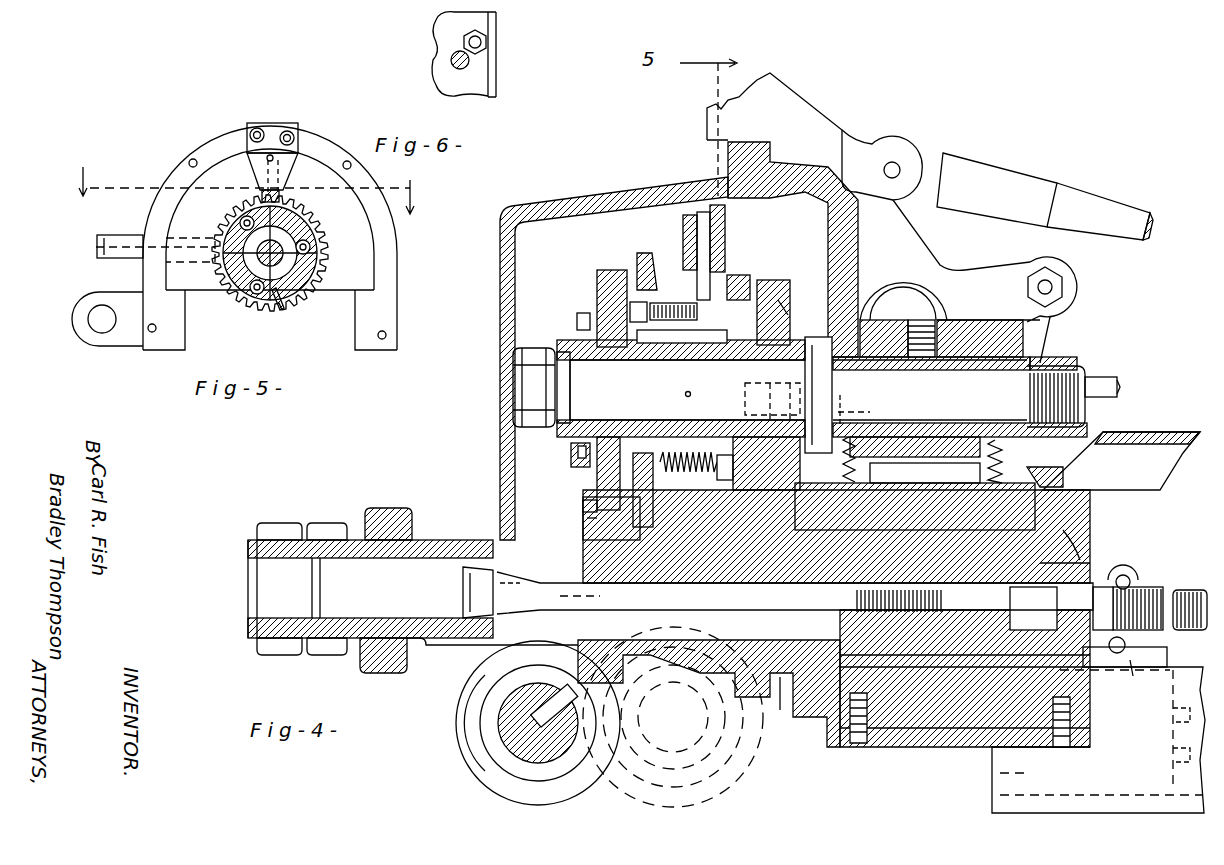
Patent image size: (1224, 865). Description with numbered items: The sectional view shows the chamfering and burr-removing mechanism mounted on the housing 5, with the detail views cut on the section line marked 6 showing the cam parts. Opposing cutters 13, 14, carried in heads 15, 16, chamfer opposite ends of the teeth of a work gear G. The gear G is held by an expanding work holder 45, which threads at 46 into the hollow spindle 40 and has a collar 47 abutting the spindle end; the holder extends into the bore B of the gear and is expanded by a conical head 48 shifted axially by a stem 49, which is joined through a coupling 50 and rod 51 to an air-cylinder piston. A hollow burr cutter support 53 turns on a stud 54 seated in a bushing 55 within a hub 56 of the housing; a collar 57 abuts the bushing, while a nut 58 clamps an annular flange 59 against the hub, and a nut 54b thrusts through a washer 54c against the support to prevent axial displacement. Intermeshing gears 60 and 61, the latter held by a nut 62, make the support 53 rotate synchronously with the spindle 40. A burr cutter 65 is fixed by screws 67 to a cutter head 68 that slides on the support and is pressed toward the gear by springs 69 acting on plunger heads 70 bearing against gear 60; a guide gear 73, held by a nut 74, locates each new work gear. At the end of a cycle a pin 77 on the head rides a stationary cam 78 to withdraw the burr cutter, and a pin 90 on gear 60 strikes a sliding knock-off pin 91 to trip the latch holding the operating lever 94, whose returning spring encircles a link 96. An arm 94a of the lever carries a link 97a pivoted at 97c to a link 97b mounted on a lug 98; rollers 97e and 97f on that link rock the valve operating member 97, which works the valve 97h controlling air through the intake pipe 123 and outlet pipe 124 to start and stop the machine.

In FIG. 4, the housing 5 is at (843, 253).
In FIG. 5, the section line 6- 6 is at (246, 178).
In FIG. 4, the cutter 13 is at (563, 683).
In FIG. 4, the cutter 14 is at (673, 717).
In FIG. 4, the head 15 is at (450, 749).
In FIG. 4, the head 16 is at (737, 781).
In FIG. 4, the spindle 40 is at (1040, 563).
In FIG. 4, the work holder 45 is at (584, 520).
In FIG. 4, the threaded connection 46 is at (756, 583).
In FIG. 4, the collar 47 is at (587, 510).
In FIG. 4, the expander head 48 is at (500, 590).
In FIG. 4, the stem 49 is at (728, 597).
In FIG. 4, the coupling 50 is at (922, 603).
In FIG. 4, the rod 51 is at (1183, 590).
In FIG. 4, the burr cutter support 53 is at (620, 368).
In FIG. 4, the stud 54 is at (640, 388).
In FIG. 4, the nut 54b is at (530, 397).
In FIG. 4, the washer 54c is at (554, 455).
In FIG. 4, the bushing 55 is at (900, 372).
In FIG. 4, the hub 56 is at (968, 322).
In FIG. 4, the collar 57 is at (820, 388).
In FIG. 4, the nut 58 is at (1087, 364).
In FIG. 4, the annular flange 59 is at (1050, 350).
In FIG. 5, the gear 60 is at (228, 215).
In FIG. 4, the gear 60 is at (786, 283).
In FIG. 4, the gear 61 is at (800, 510).
In FIG. 4, the nut 62 is at (656, 496).
In FIG. 4, the burr cutter 65 is at (643, 253).
In FIG. 4, the screws 67 is at (678, 309).
In FIG. 5, the cutter head 68 is at (308, 238).
In FIG. 6, the cutter head 68 is at (443, 65).
In FIG. 4, the cutter head 68 is at (738, 287).
In FIG. 4, the springs 69 is at (700, 475).
In FIG. 4, the plunger heads 70 is at (756, 483).
In FIG. 4, the guide gear 73 is at (598, 287).
In FIG. 4, the nut 74 is at (577, 320).
In FIG. 5, the pin 77 is at (282, 190).
In FIG. 6, the pin 77 is at (470, 60).
In FIG. 4, the pin 77 is at (683, 268).
In FIG. 5, the cam 78 is at (262, 192).
In FIG. 6, the cam 78 is at (487, 35).
In FIG. 4, the cam 78 is at (737, 273).
In FIG. 5, the pin 90 is at (330, 272).
In FIG. 4, the pin 90 is at (745, 400).
In FIG. 5, the knock-off pin 91 is at (97, 243).
In FIG. 4, the knock-off pin 91 is at (867, 410).
In FIG. 4, the operating lever 94 is at (713, 101).
In FIG. 4, the arm 94a is at (1003, 272).
In FIG. 4, the link 96 is at (1093, 203).
In FIG. 4, the valve operating member 97 is at (1098, 731).
In FIG. 4, the link 97a is at (1043, 323).
In FIG. 4, the link 97b is at (1067, 547).
In FIG. 4, the pivot 97c is at (1127, 577).
In FIG. 4, the roller 97e is at (1033, 608).
In FIG. 4, the roller 97f is at (1160, 650).
In FIG. 4, the valve 97h is at (1115, 682).
In FIG. 4, the lug 98 is at (1127, 567).
In FIG. 4, the intake pipe 123 is at (1170, 715).
In FIG. 4, the outlet pipe 124 is at (1170, 755).
In FIG. 4, the bore B is at (393, 590).
In FIG. 4, the work gear G is at (587, 518).